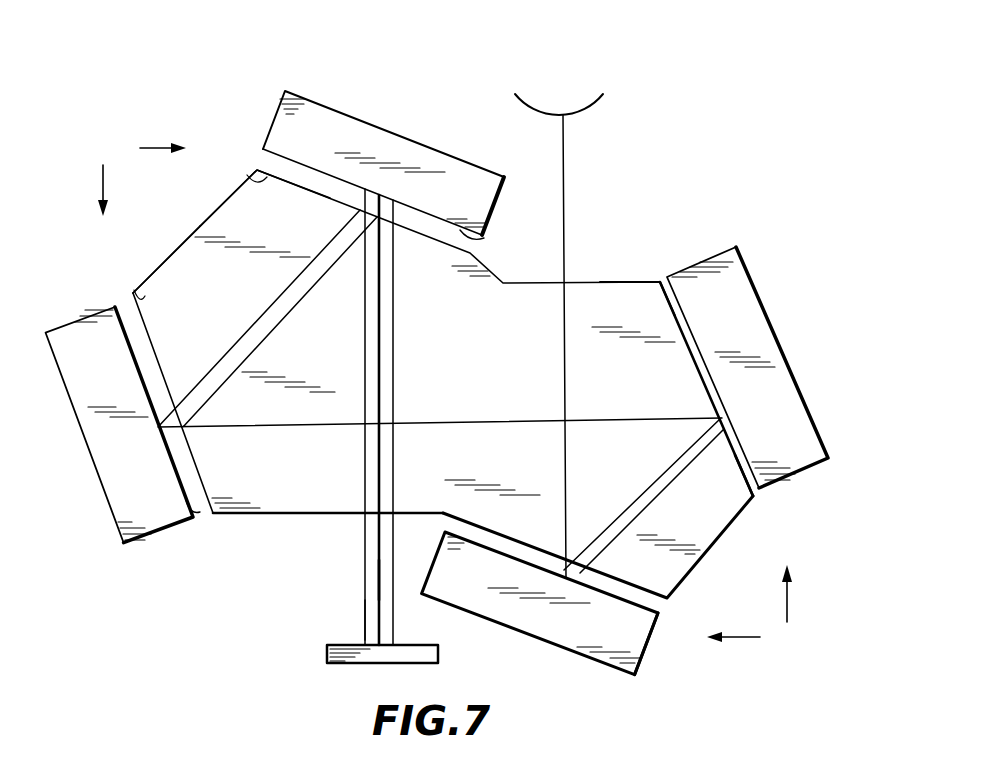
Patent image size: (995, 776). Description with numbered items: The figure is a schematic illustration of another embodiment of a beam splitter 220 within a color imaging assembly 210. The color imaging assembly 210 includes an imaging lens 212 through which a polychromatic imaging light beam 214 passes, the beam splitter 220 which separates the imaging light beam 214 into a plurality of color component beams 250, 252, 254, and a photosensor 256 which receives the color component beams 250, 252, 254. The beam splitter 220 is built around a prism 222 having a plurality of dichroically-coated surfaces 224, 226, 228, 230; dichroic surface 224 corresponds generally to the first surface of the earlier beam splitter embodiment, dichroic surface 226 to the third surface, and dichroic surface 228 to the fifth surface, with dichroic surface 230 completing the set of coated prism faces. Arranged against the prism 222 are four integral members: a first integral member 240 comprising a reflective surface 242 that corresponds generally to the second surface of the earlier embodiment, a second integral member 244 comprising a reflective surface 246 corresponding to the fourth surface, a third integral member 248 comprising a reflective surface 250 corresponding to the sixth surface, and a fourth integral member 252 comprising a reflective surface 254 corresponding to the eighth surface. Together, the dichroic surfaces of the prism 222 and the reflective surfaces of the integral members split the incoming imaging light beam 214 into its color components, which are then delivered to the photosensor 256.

The color imaging assembly 210 is at (167, 80).
The imaging lens 212 is at (592, 103).
The polychromatic imaging light beam 214 is at (566, 204).
The beam splitter 220 is at (447, 396).
The prism 222 is at (217, 217).
The dichroic surface 224 is at (653, 588).
The dichroic surface 226 is at (658, 293).
The dichroic surface 228 is at (140, 297).
The dichroic surface 230 is at (256, 178).
The first integral member 240 is at (643, 650).
The reflective surface 242 is at (650, 608).
The second integral member 244 is at (770, 340).
The reflective surface 246 is at (745, 478).
The third integral member 248 is at (100, 480).
The reflective surface 250 is at (190, 503).
The fourth integral member 252 is at (375, 131).
The reflective surface 254 is at (466, 234).
The photosensor 256 is at (337, 667).